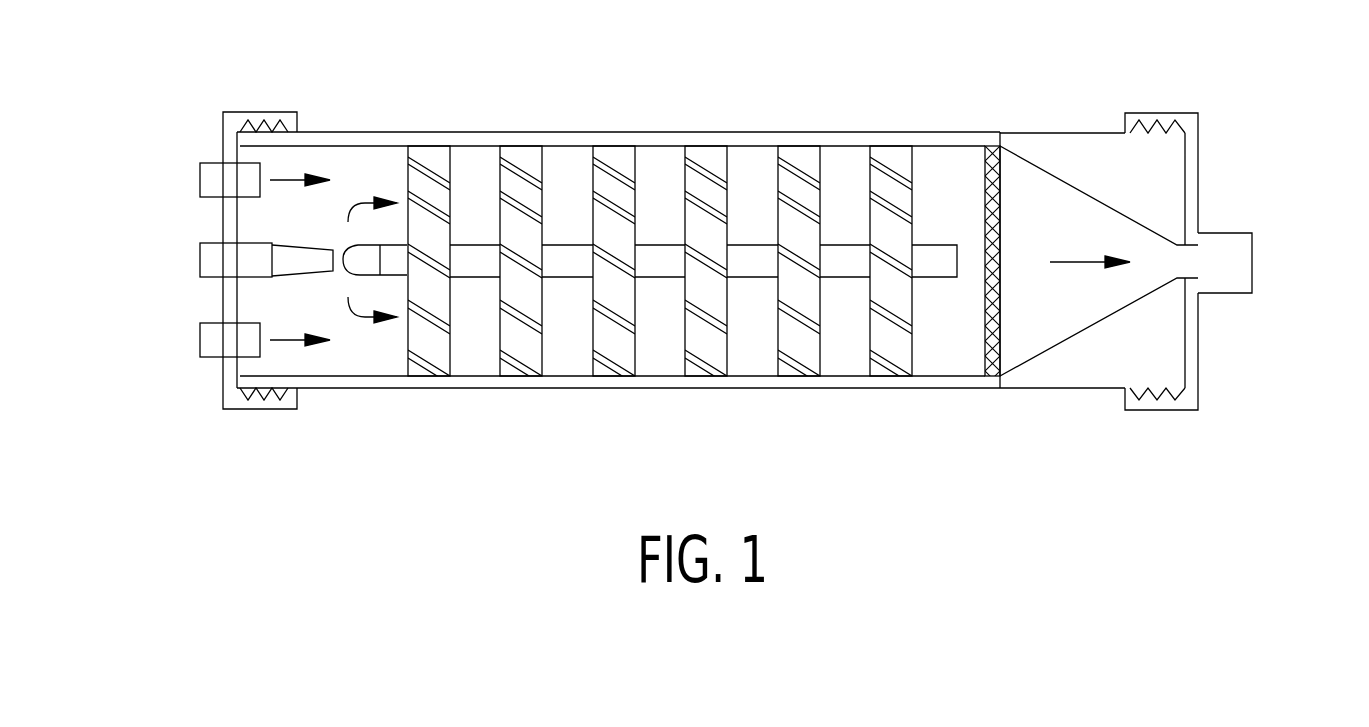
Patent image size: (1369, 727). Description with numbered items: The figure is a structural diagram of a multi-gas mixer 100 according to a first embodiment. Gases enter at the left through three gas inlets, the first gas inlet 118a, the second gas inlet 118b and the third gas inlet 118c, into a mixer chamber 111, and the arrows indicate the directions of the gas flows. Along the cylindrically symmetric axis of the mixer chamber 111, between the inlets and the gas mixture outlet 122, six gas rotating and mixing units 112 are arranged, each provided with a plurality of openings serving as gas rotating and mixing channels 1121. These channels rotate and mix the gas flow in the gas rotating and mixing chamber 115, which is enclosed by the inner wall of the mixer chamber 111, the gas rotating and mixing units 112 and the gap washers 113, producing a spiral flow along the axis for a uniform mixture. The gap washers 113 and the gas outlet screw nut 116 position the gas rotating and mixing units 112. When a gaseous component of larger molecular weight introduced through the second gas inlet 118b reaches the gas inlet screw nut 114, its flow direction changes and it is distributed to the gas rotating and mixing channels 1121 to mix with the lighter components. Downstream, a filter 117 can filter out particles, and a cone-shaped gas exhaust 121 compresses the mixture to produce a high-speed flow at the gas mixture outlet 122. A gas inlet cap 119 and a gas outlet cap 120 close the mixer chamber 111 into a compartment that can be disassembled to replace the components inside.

The multi-gas mixer 100 is at (192, 56).
The mixer chamber 111 is at (362, 138).
The gas rotating and mixing unit 112 is at (660, 219).
The gas rotating and mixing channel 1121 is at (617, 208).
The gap washer 113 is at (472, 253).
The gas inlet screw nut 114 is at (348, 255).
The gas rotating and mixing chamber 115 is at (753, 160).
The gas outlet screw nut 116 is at (937, 272).
The filter 117 is at (1000, 148).
The first gas inlet 118a is at (200, 183).
The second gas inlet 118b is at (200, 263).
The third gas inlet 118c is at (200, 343).
The gas inlet cap 119 is at (232, 402).
The gas outlet cap 120 is at (1167, 397).
The cone-shaped gas exhaust 121 is at (1058, 178).
The gas mixture outlet 122 is at (1240, 265).